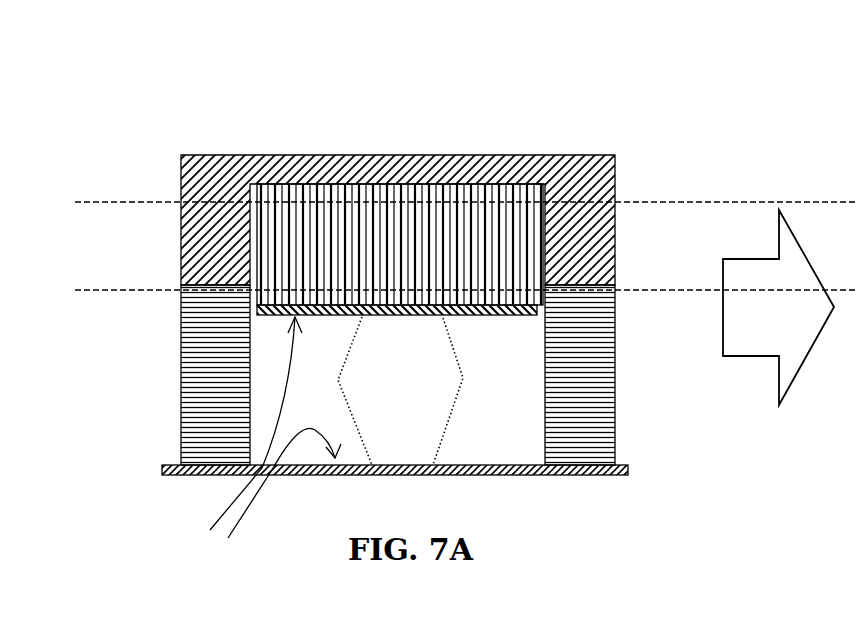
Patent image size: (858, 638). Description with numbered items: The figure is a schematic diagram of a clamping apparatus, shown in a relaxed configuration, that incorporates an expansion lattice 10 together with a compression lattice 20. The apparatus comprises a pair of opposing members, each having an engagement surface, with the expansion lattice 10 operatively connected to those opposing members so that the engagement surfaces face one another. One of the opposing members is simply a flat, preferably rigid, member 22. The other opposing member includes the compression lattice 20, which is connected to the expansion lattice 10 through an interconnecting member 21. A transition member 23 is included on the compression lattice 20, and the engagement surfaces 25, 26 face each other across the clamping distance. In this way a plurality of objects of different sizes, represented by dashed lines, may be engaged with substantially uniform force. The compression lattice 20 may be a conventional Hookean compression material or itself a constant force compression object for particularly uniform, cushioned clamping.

The expansion lattice 10 is at (593, 377).
The compression lattice 20 is at (298, 222).
The interconnecting member 21 is at (387, 165).
The flat rigid member 22 is at (467, 468).
The transition member 23 is at (482, 305).
The engagement surface 25 is at (247, 441).
The engagement surface 26 is at (400, 391).